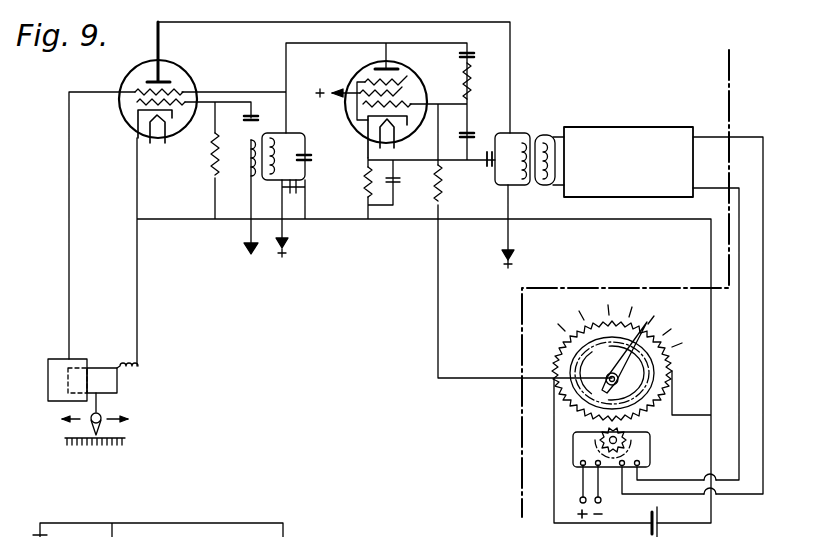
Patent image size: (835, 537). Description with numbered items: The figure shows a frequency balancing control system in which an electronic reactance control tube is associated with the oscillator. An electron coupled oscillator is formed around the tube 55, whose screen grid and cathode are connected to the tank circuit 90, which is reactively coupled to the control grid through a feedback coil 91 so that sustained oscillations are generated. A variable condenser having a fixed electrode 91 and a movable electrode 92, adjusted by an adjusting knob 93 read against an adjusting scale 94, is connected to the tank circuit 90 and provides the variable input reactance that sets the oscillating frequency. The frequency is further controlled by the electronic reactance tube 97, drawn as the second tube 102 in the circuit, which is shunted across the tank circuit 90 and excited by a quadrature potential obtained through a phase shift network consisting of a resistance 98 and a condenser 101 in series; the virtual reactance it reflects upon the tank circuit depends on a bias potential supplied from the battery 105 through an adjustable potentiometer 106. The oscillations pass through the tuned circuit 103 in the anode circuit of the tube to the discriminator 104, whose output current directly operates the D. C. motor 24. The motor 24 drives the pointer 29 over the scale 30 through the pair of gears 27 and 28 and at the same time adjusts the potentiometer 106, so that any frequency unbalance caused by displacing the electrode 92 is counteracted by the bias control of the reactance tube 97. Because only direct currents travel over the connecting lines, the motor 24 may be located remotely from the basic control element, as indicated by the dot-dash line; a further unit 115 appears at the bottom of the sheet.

The oscillator tube 55 is at (192, 77).
The tank circuit 90 is at (286, 163).
The feedback coil 91 is at (243, 158).
The movable electrode 92 is at (110, 380).
The adjusting knob 93 is at (102, 412).
The adjusting scale 94 is at (105, 444).
The electronic reactance tube 97 is at (425, 82).
The resistance 98 is at (470, 80).
The condenser 101 is at (471, 131).
The second vacuum tube 102 is at (375, 66).
The tuned circuit 103 is at (518, 130).
The discriminator 104 is at (625, 127).
The battery 105 is at (662, 530).
The adjustable potentiometer 106 is at (555, 353).
The scale 30 is at (583, 309).
The pointer 29 is at (624, 363).
The gear 28 is at (590, 412).
The gear 27 is at (634, 428).
The motor 24 is at (652, 448).
The lower unit 115 is at (158, 530).